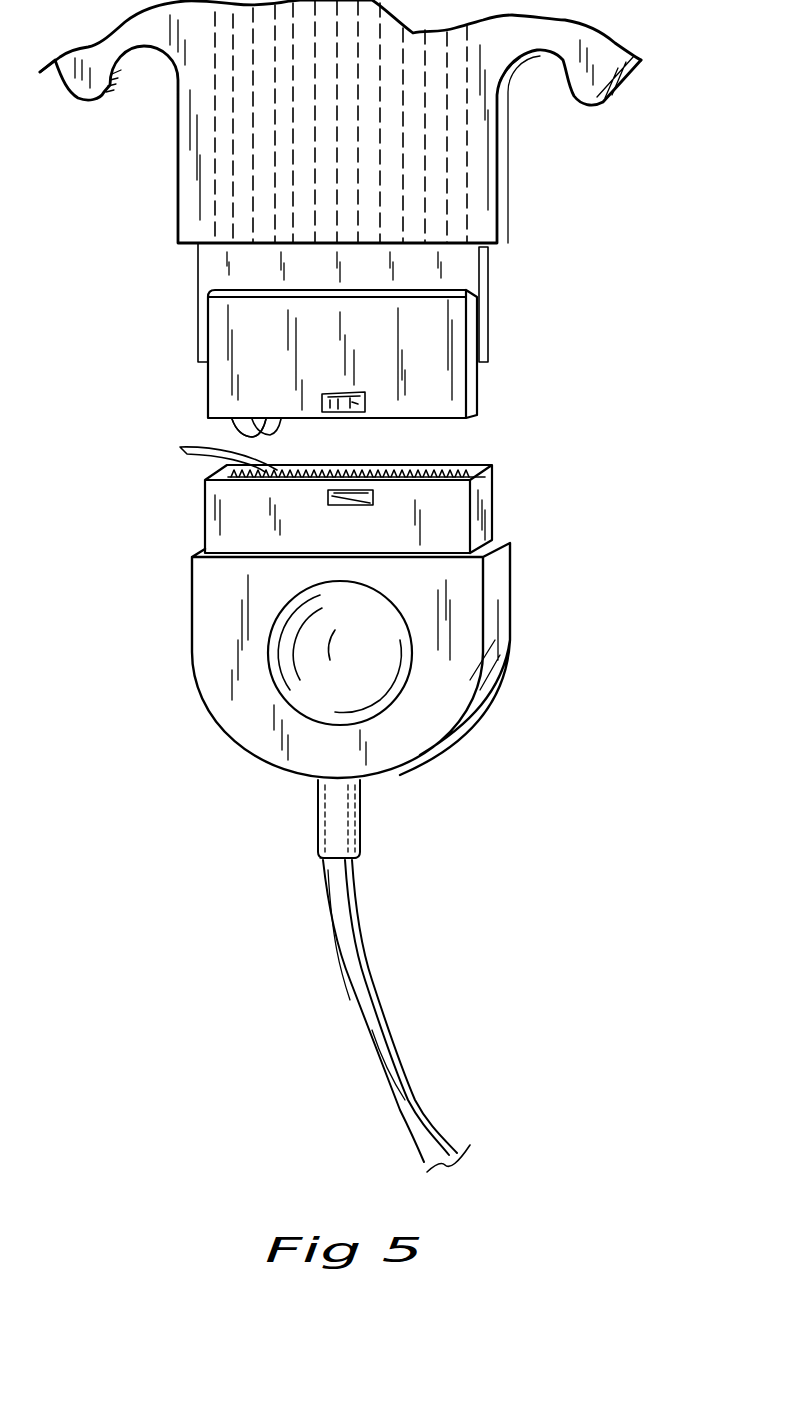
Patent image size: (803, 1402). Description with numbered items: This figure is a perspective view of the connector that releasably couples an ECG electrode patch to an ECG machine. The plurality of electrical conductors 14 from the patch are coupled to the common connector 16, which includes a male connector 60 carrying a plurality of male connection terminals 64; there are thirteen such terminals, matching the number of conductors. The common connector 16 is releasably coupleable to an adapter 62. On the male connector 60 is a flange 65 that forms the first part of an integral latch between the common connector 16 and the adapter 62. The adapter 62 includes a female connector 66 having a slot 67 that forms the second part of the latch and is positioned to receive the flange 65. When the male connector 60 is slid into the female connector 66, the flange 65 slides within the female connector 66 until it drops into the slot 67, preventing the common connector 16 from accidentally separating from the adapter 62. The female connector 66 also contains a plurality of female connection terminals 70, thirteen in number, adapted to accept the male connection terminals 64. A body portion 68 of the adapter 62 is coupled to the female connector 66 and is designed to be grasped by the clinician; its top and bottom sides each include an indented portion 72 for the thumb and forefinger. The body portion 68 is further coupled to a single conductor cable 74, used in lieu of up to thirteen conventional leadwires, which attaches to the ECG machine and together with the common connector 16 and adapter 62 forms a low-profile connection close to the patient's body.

The plurality of electrical conductors 14 is at (497, 182).
The common connector 16 is at (368, 347).
The male connector 60 is at (265, 348).
The adapter 62 is at (405, 800).
The plurality of male connection terminals 64 is at (238, 433).
The flange 65 is at (365, 400).
The female connector 66 is at (443, 537).
The slot 67 is at (373, 499).
The body portion 68 is at (443, 708).
The plurality of female connection terminals 70 is at (183, 447).
The indented portion 72 is at (368, 643).
The single conductor cable 74 is at (375, 973).